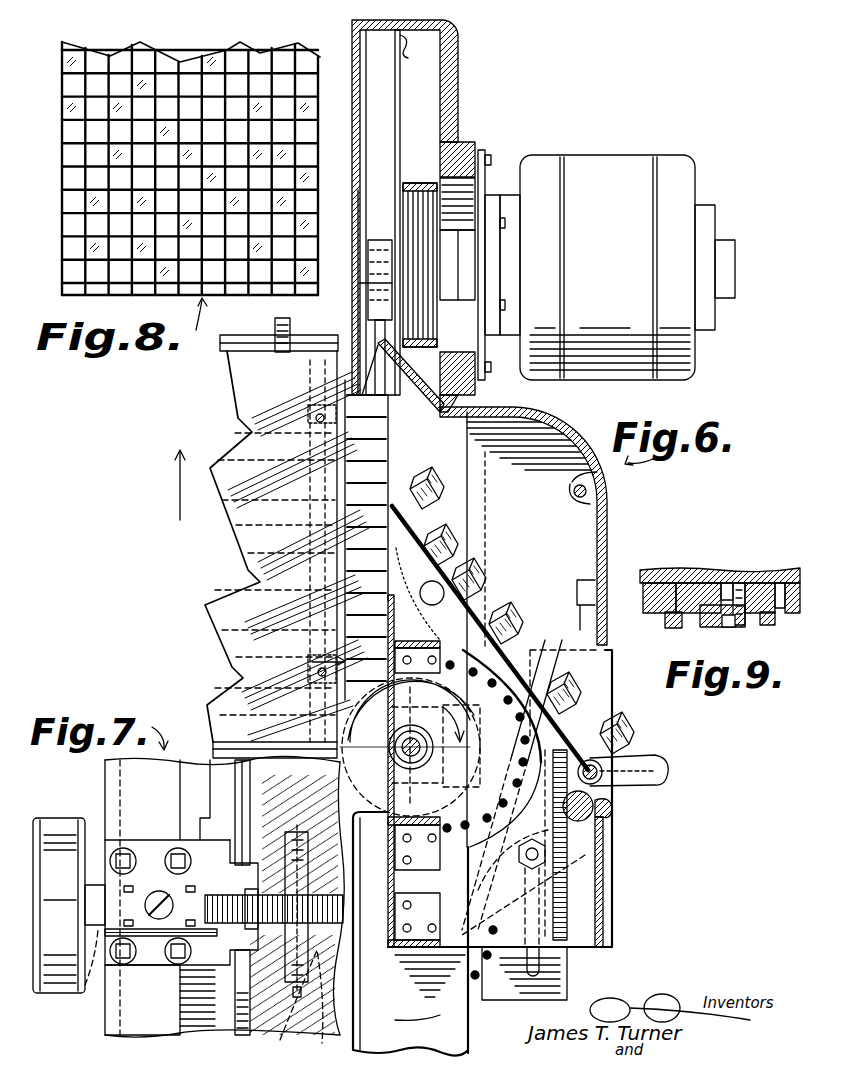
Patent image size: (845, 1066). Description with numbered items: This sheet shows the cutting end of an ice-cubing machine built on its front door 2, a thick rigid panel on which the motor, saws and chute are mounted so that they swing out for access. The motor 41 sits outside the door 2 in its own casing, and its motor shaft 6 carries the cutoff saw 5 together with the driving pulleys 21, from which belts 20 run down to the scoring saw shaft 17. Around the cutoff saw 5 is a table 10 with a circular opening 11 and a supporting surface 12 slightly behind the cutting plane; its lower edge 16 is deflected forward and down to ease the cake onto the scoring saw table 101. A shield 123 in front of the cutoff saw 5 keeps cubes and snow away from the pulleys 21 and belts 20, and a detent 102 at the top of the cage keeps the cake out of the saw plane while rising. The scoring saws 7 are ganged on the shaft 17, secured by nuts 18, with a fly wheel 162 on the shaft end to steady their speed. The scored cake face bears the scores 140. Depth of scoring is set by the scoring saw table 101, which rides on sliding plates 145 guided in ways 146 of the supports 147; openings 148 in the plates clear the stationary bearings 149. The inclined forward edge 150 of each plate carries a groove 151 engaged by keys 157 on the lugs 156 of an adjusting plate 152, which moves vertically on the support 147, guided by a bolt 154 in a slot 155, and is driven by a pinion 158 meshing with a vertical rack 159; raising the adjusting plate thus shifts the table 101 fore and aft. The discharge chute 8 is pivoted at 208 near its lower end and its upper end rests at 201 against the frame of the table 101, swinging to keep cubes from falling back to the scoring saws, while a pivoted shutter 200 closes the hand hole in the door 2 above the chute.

In FIG. 6, the door 2 is at (462, 95).
In FIG. 9, the door 2 is at (760, 568).
In FIG. 7, the door 2 is at (120, 812).
In FIG. 6, the cutoff saw 5 is at (364, 148).
In FIG. 6, the motor shaft 6 is at (372, 240).
In FIG. 6, the scoring saws 7 is at (388, 871).
In FIG. 7, the scoring saws 7 is at (267, 1020).
In FIG. 6, the discharge chute 8 is at (606, 722).
In FIG. 6, the table 10 is at (362, 90).
In FIG. 6, the circular opening 11 is at (353, 185).
In FIG. 6, the supporting surface 12 is at (352, 50).
In FIG. 6, the lower edge of the table 16 is at (380, 458).
In FIG. 6, the scoring saw shaft 17 is at (433, 747).
In FIG. 7, the scoring saw shaft 17 is at (86, 985).
In FIG. 7, the nuts 18 is at (274, 974).
In FIG. 6, the belts 20 is at (408, 348).
In FIG. 6, the driving pulleys 21 is at (420, 183).
In FIG. 6, the motor 41 is at (660, 155).
In FIG. 6, the scoring saw table 101 is at (336, 592).
In FIG. 6, the detent 102 is at (291, 334).
In FIG. 6, the shield 123 is at (400, 130).
In FIG. 8, the scores 140 is at (62, 166).
In FIG. 6, the sliding plates 145 is at (520, 643).
In FIG. 9, the ways 146 is at (768, 626).
In FIG. 6, the supports 147 is at (549, 421).
In FIG. 9, the supports 147 is at (774, 572).
In FIG. 6, the openings 148 is at (428, 800).
In FIG. 6, the bearings 149 is at (440, 762).
In FIG. 7, the bearings 149 is at (212, 845).
In FIG. 6, the forward edge of plate 150 is at (522, 892).
In FIG. 9, the forward edge of plate 150 is at (734, 586).
In FIG. 6, the groove 151 is at (468, 870).
In FIG. 9, the groove 151 is at (665, 600).
In FIG. 6, the adjusting plate 152 is at (568, 985).
In FIG. 9, the adjusting plate 152 is at (790, 622).
In FIG. 6, the bolt 154 is at (548, 852).
In FIG. 6, the slot 155 is at (548, 868).
In FIG. 9, the lugs 156 is at (720, 628).
In FIG. 9, the keys 157 is at (666, 622).
In FIG. 6, the pinions 158 is at (596, 814).
In FIG. 6, the vertical racks 159 is at (568, 900).
In FIG. 7, the fly wheel 162 is at (72, 822).
In FIG. 6, the pivoted shutter 200 is at (607, 510).
In FIG. 6, the chute rest point 201 is at (447, 588).
In FIG. 6, the chute pivot 208 is at (620, 782).